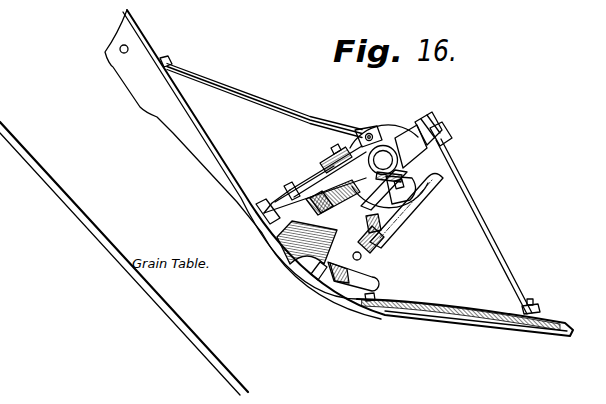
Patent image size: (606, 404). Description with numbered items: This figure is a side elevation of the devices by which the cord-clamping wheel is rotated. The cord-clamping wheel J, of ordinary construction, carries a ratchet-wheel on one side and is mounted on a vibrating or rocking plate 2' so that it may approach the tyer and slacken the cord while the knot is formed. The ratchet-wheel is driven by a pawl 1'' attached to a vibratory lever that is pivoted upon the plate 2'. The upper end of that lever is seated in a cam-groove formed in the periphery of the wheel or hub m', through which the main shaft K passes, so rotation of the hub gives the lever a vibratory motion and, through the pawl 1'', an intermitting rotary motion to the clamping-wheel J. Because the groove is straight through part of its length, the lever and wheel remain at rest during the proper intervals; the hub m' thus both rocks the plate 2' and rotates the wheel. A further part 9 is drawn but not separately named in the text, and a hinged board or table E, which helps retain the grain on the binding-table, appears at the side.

The hinged boards or tables E is at (243, 130).
The cam-wheel or hub m' is at (414, 140).
The main shaft K is at (383, 160).
The pawl 1'' is at (376, 188).
The hatched strip 9 is at (333, 206).
The vibrating plate 2' is at (406, 211).
The cord-clamping wheel J is at (316, 278).